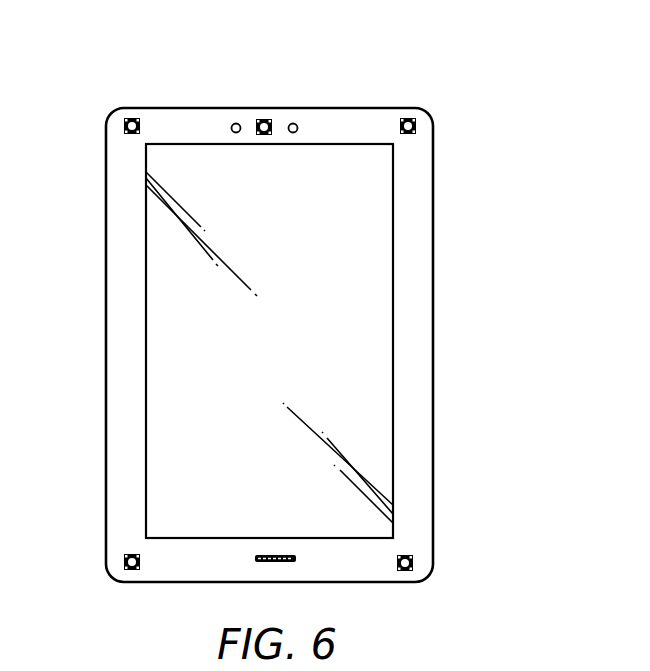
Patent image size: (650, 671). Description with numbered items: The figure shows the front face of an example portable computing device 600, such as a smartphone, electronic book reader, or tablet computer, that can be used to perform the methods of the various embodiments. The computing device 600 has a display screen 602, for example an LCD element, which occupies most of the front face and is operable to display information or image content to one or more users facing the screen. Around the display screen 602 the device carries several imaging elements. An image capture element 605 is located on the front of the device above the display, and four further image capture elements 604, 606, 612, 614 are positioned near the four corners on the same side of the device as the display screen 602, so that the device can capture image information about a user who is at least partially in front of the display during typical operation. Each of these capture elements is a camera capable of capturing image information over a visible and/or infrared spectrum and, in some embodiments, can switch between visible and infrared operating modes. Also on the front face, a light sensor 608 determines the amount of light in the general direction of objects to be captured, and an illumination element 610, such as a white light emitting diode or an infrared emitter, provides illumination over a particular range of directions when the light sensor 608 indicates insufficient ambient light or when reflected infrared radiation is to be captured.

The computing device 600 is at (570, 100).
The display screen 602 is at (144, 153).
The image capture element 604 is at (132, 118).
The image capture element 605 is at (264, 119).
The image capture element 606 is at (409, 118).
The light sensor 608 is at (296, 124).
The illumination element 610 is at (235, 123).
The image capture element 612 is at (132, 570).
The image capture element 614 is at (405, 571).